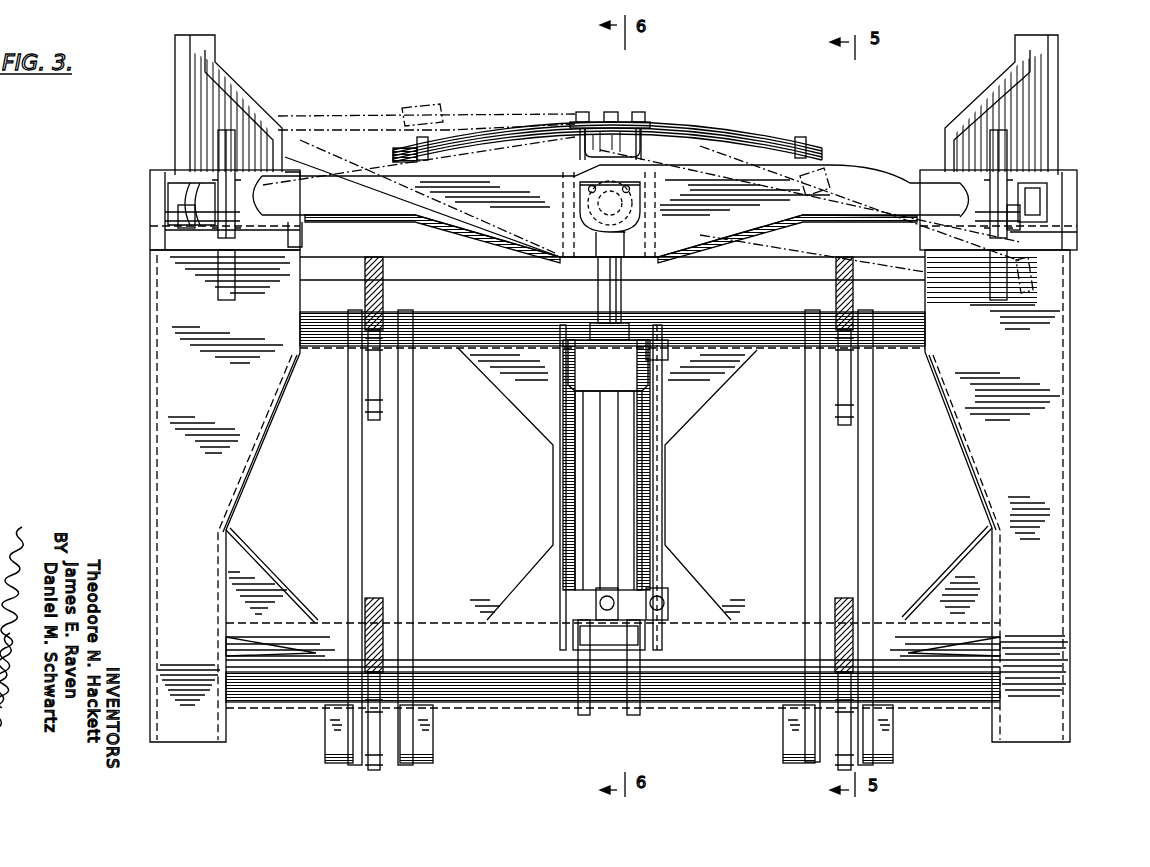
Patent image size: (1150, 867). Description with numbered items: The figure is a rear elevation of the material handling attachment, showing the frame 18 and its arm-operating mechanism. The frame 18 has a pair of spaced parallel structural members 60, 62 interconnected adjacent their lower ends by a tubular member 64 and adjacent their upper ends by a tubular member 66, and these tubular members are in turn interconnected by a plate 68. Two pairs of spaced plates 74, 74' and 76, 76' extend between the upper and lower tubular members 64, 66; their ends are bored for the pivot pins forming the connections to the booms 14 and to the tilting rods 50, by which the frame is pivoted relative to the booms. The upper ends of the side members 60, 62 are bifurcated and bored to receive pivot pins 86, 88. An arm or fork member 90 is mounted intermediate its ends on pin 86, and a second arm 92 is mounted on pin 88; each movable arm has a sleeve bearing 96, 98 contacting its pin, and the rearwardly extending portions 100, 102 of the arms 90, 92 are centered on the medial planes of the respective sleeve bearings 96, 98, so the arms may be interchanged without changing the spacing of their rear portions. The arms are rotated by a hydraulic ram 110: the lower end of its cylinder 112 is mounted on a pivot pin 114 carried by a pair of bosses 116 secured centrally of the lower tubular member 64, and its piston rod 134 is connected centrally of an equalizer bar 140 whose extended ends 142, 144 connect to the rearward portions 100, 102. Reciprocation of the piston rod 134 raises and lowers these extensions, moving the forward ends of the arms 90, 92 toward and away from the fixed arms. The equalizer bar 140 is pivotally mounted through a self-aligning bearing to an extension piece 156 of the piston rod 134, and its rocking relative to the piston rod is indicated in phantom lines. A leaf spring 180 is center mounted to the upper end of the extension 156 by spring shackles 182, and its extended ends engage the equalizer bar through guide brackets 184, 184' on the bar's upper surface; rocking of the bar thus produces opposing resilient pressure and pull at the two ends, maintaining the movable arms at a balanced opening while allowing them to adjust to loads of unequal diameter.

The booms 14 is at (375, 755).
The frame 18 is at (140, 492).
The rods 50 is at (372, 268).
The structural member 60 is at (152, 413).
The structural member 62 is at (1052, 484).
The tubular member 64 is at (503, 682).
The tubular member 66 is at (743, 307).
The plate 68 is at (507, 582).
The spaced plate 74 is at (333, 537).
The spaced plate 74' is at (425, 537).
The spaced plate 76 is at (789, 536).
The spaced plate 76' is at (885, 537).
The pivot pin 86 is at (170, 216).
The pivot pin 88 is at (1020, 216).
The arm or fork member 90 is at (172, 119).
The second arm 92 is at (1062, 107).
The sleeve bearing 96 is at (180, 193).
The sleeve bearing 98 is at (1047, 198).
The rearwardly extending portion 100 is at (230, 145).
The rearwardly extending portion 102 is at (998, 137).
The hydraulic ram 110 is at (617, 515).
The cylinder 112 is at (586, 553).
The pivot pin 114 is at (645, 650).
The bosses 116 is at (630, 717).
The piston rod 134 is at (598, 298).
The equalizer bar 140 is at (855, 188).
The extended end 142 is at (1030, 233).
The extended end 144 is at (195, 227).
The extension piece 156 is at (596, 143).
The leaf spring 180 is at (686, 126).
The spring shackles 182 is at (568, 124).
The guide bracket 184 is at (418, 122).
The guide bracket 184' is at (800, 121).